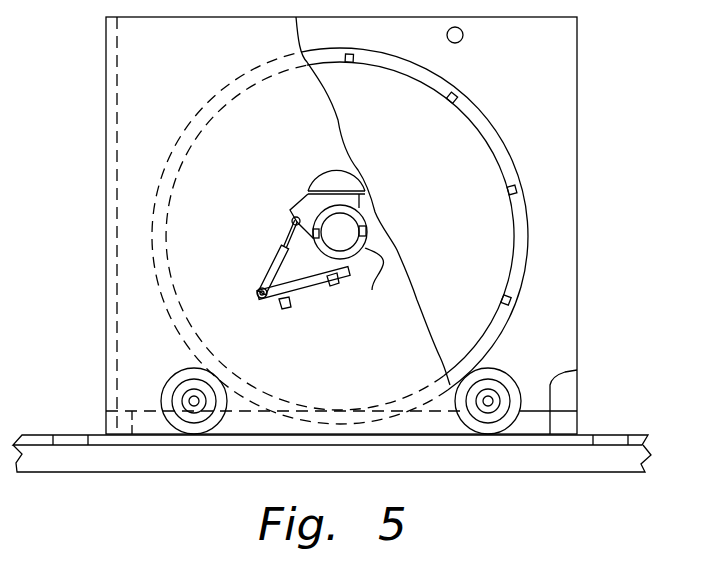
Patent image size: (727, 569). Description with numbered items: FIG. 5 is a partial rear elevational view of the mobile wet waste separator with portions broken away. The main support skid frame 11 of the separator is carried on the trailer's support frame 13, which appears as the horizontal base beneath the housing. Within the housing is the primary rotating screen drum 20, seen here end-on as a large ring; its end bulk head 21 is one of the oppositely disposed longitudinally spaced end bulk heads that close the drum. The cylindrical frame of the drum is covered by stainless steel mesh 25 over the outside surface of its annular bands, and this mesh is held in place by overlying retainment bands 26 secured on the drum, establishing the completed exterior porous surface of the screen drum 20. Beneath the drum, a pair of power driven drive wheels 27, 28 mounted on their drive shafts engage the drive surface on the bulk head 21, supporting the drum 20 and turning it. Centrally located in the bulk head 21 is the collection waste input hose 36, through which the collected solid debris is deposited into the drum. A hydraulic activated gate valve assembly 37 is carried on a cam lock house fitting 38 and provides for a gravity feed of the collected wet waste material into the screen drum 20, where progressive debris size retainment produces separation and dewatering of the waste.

The main support skid frame 11 is at (615, 436).
The support frame 13 is at (560, 452).
The primary rotating screen drum 20 is at (528, 203).
The end bulk head 21 is at (430, 135).
The stainless steel mesh 25 is at (522, 263).
The retainment bands 26 is at (518, 302).
The drive wheel 27 is at (172, 372).
The drive wheel 28 is at (500, 378).
The collection waste input hose 36 is at (368, 211).
The hydraulic activated gate valve assembly 37 is at (275, 235).
The cam lock house fitting 38 is at (375, 286).